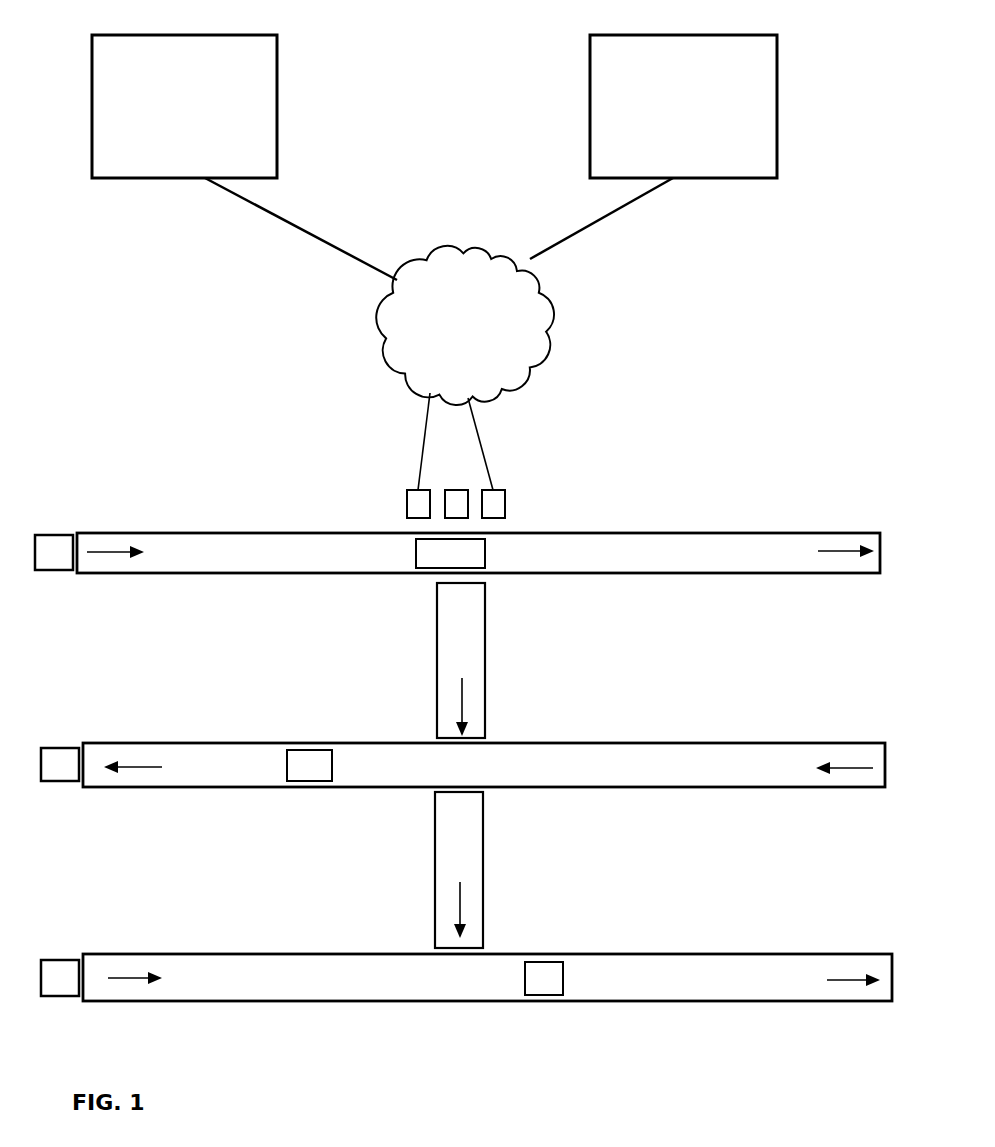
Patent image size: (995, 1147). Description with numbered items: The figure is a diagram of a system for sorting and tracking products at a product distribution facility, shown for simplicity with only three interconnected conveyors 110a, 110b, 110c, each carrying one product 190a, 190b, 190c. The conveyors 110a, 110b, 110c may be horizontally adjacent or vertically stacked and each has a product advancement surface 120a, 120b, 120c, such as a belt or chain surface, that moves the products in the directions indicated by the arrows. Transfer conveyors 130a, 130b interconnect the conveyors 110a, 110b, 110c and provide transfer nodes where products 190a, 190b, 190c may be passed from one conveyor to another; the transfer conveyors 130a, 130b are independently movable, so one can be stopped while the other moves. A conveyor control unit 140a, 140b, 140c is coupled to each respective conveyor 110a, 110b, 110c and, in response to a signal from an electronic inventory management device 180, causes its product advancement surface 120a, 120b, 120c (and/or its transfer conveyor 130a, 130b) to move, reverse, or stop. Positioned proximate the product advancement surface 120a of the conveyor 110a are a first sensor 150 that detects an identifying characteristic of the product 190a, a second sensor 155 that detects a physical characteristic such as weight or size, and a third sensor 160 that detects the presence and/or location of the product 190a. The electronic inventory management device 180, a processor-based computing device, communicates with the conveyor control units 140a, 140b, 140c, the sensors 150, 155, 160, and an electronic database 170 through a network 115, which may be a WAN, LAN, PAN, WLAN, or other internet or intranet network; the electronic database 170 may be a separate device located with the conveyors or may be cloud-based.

The conveyor 110a is at (778, 533).
The conveyor 110b is at (810, 743).
The conveyor 110c is at (818, 955).
The network 115 is at (549, 303).
The product advancement surface 120a is at (713, 563).
The product advancement surface 120b is at (706, 782).
The product advancement surface 120c is at (718, 993).
The transfer conveyor 130a is at (485, 680).
The transfer conveyor 130b is at (483, 885).
The conveyor control unit 140a is at (55, 535).
The conveyor control unit 140b is at (60, 748).
The conveyor control unit 140c is at (60, 960).
The first sensor 150 is at (407, 507).
The second sensor 155 is at (456, 490).
The third sensor 160 is at (505, 500).
The electronic database 170 is at (277, 153).
The electronic inventory management device 180 is at (777, 123).
The product 190a is at (485, 553).
The product 190b is at (310, 750).
The product 190c is at (542, 962).